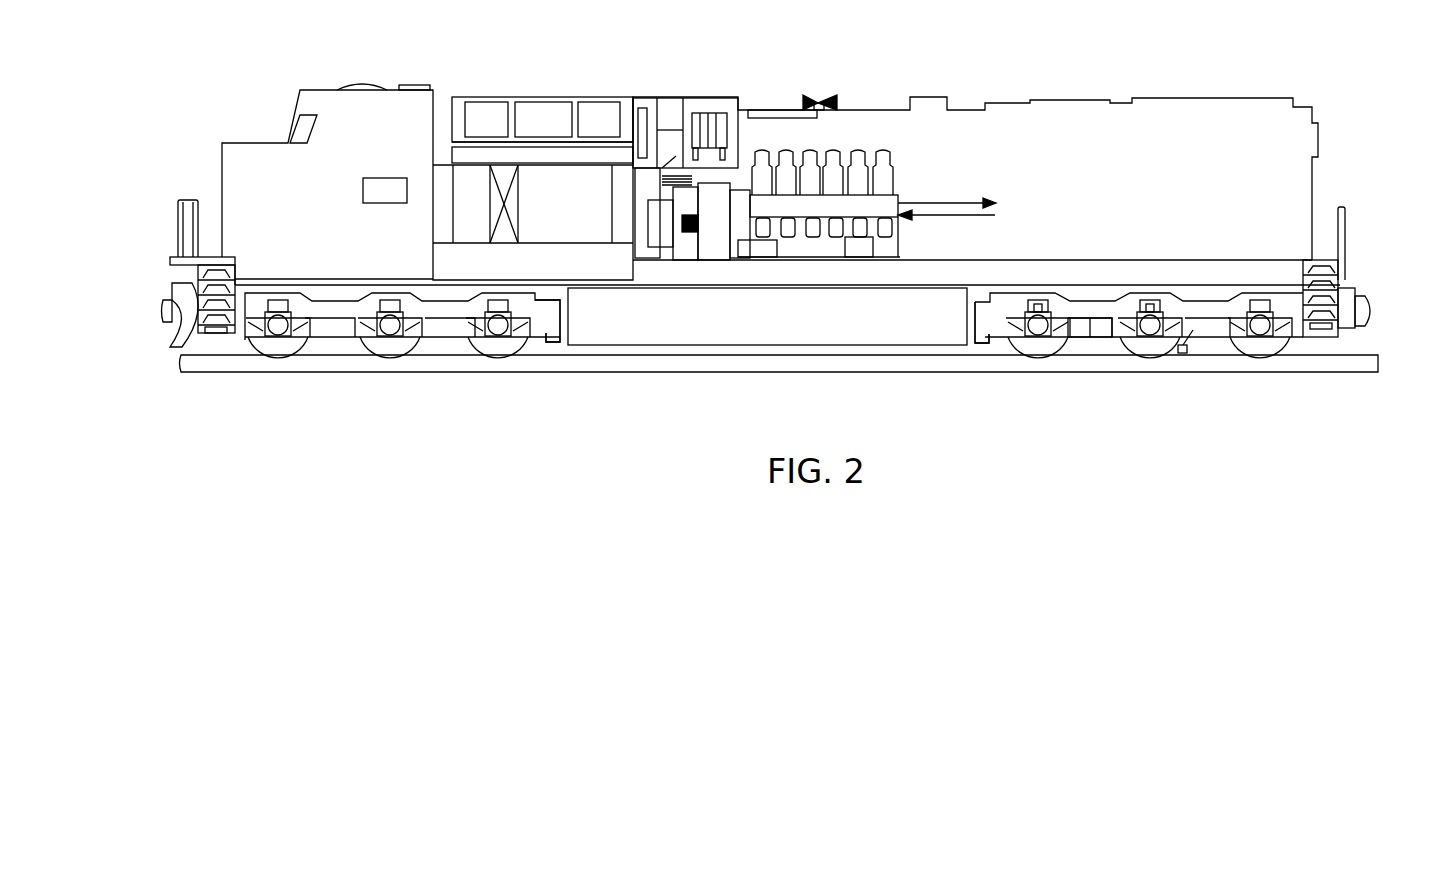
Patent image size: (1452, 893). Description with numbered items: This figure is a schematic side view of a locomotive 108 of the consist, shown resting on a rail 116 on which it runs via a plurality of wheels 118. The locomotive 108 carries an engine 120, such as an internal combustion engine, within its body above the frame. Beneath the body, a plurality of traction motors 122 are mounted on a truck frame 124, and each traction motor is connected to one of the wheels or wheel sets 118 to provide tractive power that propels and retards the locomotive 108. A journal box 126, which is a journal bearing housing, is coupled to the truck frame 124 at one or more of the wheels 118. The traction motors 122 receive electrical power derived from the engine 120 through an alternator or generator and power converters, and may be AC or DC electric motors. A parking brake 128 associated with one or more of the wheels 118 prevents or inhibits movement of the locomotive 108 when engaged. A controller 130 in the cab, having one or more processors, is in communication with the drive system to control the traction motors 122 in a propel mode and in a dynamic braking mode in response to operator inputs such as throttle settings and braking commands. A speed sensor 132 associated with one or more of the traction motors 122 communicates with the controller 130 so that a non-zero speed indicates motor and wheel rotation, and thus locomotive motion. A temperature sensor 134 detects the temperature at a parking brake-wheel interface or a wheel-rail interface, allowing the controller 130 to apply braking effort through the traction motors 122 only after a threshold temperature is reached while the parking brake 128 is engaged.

The locomotive 108 is at (1215, 55).
The rail 116 is at (207, 365).
The wheels 118 is at (362, 352).
The engine 120 is at (818, 208).
The traction motors 122 is at (278, 284).
The truck frame 124 is at (540, 312).
The journal box 126 is at (287, 335).
The parking brake 128 is at (1113, 332).
The controller 130 is at (363, 185).
The speed sensor 132 is at (1043, 287).
The temperature sensor 134 is at (1187, 352).